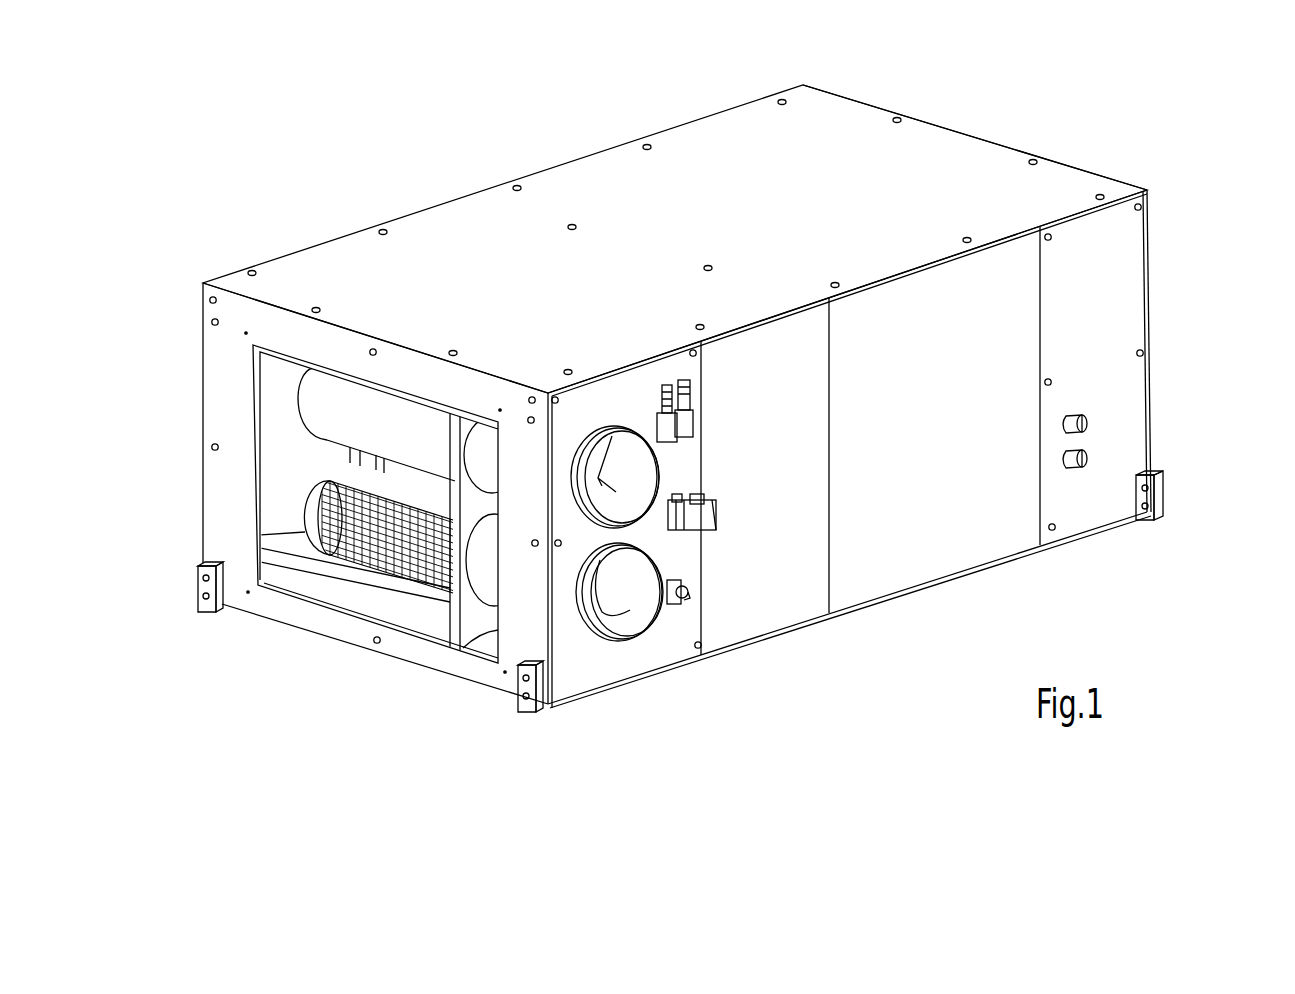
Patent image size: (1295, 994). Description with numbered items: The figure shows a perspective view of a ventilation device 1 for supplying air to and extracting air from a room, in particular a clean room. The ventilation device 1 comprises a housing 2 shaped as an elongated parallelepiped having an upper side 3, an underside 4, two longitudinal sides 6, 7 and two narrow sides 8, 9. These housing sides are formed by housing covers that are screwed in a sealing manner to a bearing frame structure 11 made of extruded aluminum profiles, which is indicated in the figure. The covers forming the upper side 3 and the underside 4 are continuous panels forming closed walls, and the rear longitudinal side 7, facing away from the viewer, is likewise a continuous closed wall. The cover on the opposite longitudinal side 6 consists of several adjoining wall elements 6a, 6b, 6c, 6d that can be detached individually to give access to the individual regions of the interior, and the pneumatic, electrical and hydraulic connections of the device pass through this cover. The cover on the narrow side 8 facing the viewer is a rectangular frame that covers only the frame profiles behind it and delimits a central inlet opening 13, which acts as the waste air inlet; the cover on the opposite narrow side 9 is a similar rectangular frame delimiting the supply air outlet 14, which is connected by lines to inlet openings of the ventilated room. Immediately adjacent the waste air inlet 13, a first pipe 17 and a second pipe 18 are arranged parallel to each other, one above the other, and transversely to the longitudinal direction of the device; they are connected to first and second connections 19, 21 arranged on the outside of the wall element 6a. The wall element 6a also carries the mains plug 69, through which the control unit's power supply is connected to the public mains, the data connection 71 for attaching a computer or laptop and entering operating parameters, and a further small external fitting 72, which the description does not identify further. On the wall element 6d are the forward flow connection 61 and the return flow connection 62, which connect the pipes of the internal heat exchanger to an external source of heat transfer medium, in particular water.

The ventilation device 1 is at (270, 170).
The housing 2 is at (196, 278).
The upper side 3 is at (710, 165).
The underside 4 is at (487, 688).
The longitudinal side 6 is at (1115, 283).
The wall element 6a is at (638, 658).
The wall element 6b is at (777, 610).
The wall element 6c is at (927, 560).
The wall element 6d is at (1093, 513).
The longitudinal side 7 is at (200, 383).
The narrow side 8 is at (215, 492).
The narrow side 9 is at (1060, 163).
The frame structure 11 is at (275, 567).
The inlet opening 13 is at (493, 632).
The supply air outlet 14 is at (1170, 222).
The first pipe 17 is at (332, 395).
The second pipe 18 is at (390, 480).
The first connection 19 is at (612, 432).
The second connection 21 is at (585, 632).
The forward flow connection 61 is at (1083, 418).
The return flow connection 62 is at (1073, 458).
The mains plug 69 is at (703, 522).
The data connection 71 is at (663, 400).
The fitting 72 is at (678, 607).